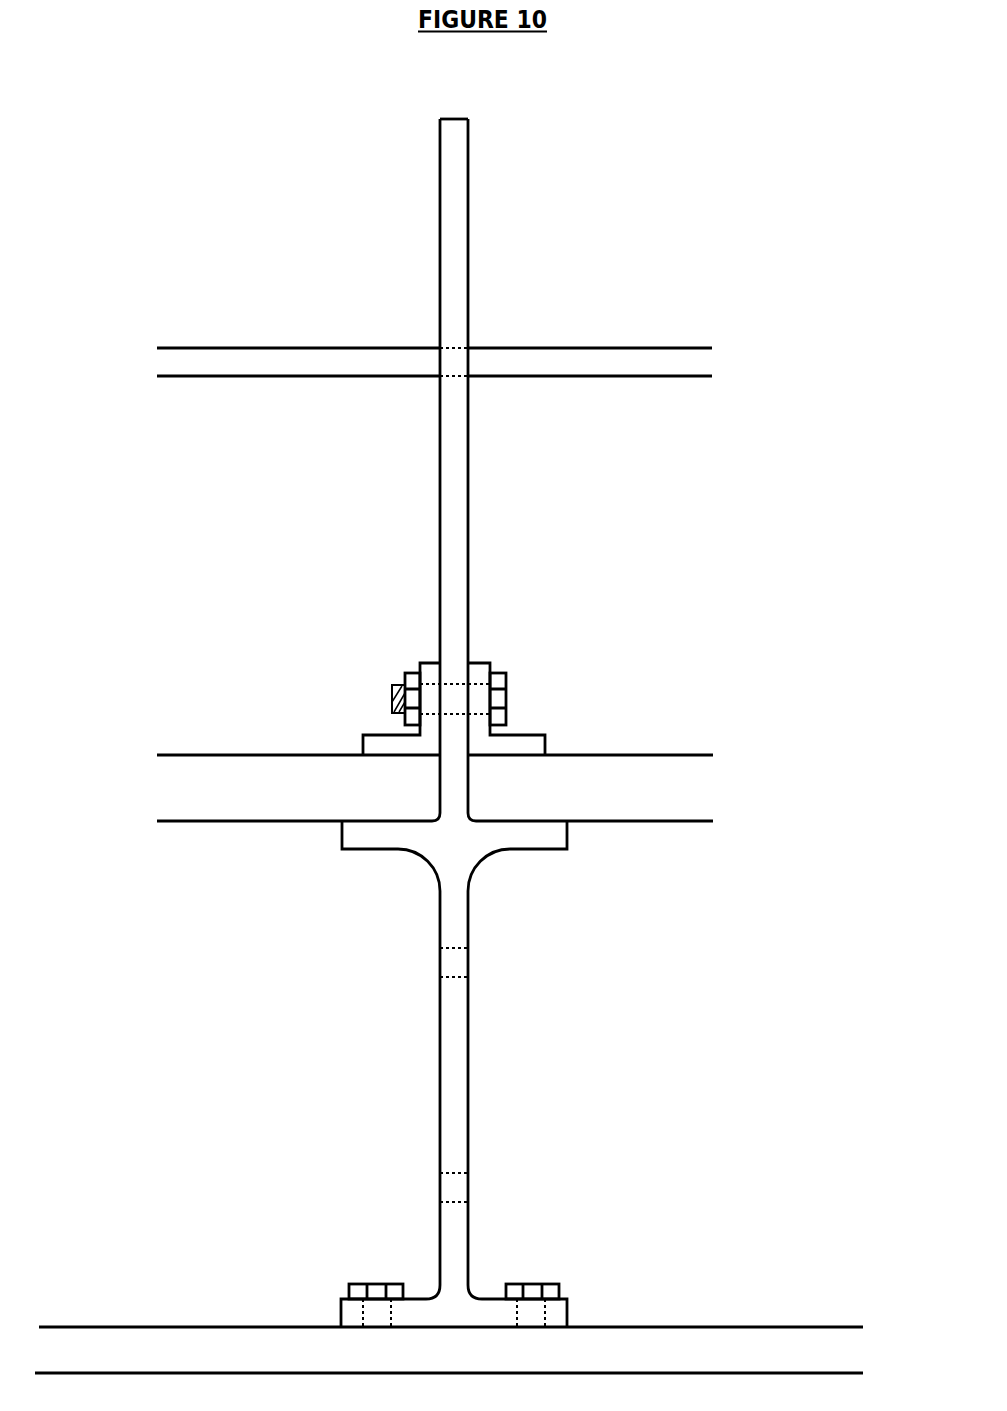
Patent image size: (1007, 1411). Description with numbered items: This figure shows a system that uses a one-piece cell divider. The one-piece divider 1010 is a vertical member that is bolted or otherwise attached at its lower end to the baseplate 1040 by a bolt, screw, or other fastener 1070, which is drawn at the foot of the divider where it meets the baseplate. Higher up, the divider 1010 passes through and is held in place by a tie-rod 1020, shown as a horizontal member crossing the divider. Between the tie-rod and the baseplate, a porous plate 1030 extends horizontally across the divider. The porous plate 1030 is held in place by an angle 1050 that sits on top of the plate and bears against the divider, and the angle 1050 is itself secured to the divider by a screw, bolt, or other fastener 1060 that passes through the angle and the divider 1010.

The one-piece divider 1010 is at (440, 612).
The tie-rod 1020 is at (523, 348).
The porous plate 1030 is at (585, 755).
The baseplate 1040 is at (625, 1327).
The angle 1050 is at (535, 735).
The fastener 1060 is at (506, 682).
The fastener 1070 is at (545, 1284).